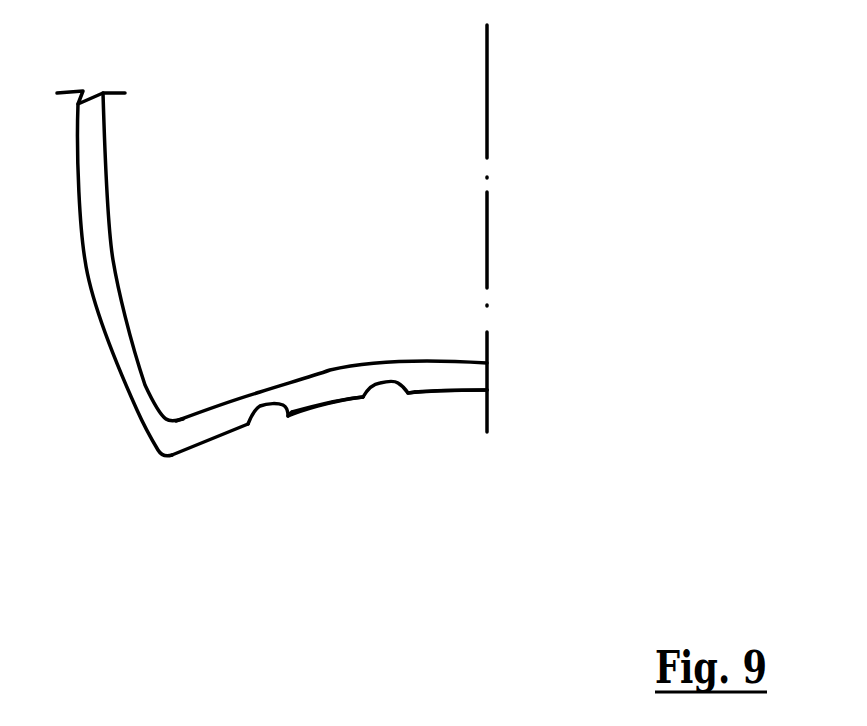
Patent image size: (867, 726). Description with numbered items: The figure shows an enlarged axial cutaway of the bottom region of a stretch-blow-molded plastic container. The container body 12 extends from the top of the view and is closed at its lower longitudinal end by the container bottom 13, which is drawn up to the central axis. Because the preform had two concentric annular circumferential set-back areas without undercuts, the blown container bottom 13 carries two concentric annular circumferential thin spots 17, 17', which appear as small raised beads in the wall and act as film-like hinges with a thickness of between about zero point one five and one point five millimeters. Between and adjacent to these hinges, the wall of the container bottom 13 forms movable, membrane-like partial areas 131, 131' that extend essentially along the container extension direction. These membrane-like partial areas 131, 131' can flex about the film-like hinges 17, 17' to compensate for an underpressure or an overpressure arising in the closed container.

The container body 12 is at (108, 188).
The container bottom 13 is at (333, 306).
The thin spot 17 is at (406, 453).
The thin spot 17' is at (297, 475).
The partial area 131 is at (501, 470).
The partial area 131' is at (390, 506).